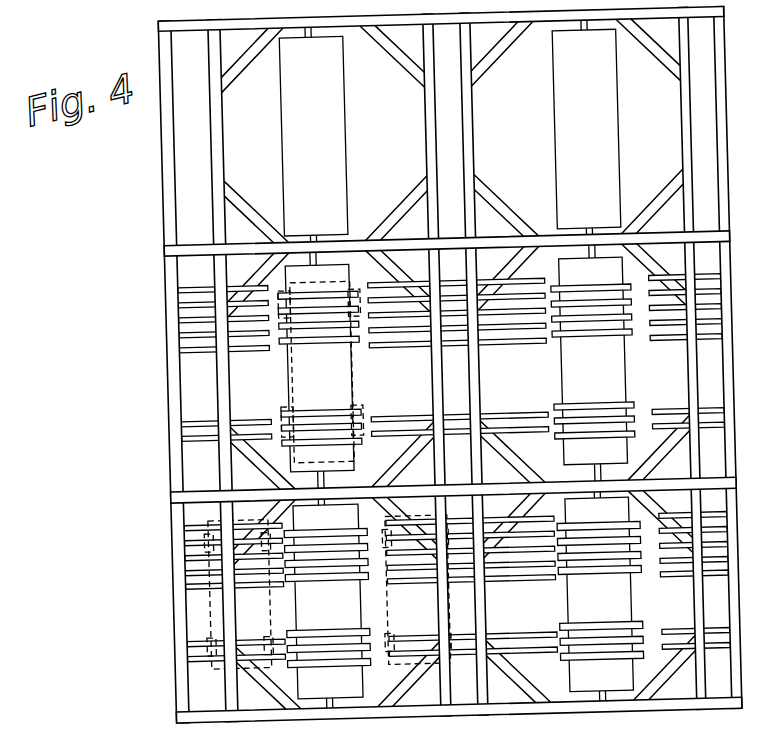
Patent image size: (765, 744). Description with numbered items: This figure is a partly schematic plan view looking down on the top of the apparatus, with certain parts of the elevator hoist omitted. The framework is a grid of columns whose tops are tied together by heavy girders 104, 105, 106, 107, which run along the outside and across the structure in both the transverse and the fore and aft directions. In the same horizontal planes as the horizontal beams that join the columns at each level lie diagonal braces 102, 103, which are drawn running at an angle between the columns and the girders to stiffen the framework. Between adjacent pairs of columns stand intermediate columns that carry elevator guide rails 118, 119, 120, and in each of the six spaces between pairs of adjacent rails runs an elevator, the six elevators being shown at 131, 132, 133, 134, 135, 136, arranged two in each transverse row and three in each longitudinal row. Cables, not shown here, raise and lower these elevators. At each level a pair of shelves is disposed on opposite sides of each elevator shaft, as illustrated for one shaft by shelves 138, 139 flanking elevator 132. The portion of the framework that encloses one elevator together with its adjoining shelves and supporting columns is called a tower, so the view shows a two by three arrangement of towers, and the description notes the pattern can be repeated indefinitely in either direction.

The diagonal brace 102 is at (241, 200).
The diagonal brace 103 is at (281, 258).
The heavy girder 104 is at (624, 715).
The heavy girder 105 is at (180, 261).
The heavy girder 106 is at (220, 118).
The heavy girder 107 is at (361, 242).
The elevator guide rail 118 is at (326, 704).
The elevator guide rail 119 is at (329, 496).
The elevator guide rail 120 is at (342, 487).
The elevator 131 is at (334, 617).
The elevator 132 is at (606, 617).
The elevator 133 is at (335, 392).
The elevator 134 is at (606, 389).
The elevator 135 is at (336, 152).
The elevator 136 is at (604, 152).
The shelf 138 is at (516, 622).
The shelf 139 is at (682, 618).